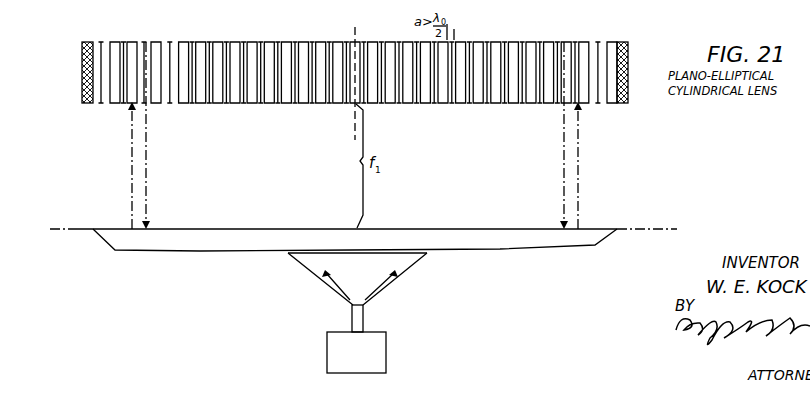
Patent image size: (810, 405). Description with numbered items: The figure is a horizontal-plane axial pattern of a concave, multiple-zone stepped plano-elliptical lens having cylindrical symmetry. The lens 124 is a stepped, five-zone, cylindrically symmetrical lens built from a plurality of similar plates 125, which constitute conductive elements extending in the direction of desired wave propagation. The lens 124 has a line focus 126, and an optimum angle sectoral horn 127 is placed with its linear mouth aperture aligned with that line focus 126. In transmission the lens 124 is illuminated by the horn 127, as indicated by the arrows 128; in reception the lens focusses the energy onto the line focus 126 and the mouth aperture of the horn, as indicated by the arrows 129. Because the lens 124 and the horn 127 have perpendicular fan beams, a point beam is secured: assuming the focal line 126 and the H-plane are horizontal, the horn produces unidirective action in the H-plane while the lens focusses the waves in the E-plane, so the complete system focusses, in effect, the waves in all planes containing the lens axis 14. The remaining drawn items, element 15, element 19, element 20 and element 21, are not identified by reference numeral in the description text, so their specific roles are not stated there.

The lens axis 14 is at (357, 31).
The rays 15 is at (350, 301).
The cone of radiation 19 is at (433, 242).
The source horn 20 is at (364, 318).
The source unit 21 is at (380, 352).
The lens 124 is at (621, 42).
The plates 125 is at (558, 43).
The line focus 126 is at (83, 231).
The sectoral horn 127 is at (292, 256).
The arrows 128 is at (131, 137).
The arrows 129 is at (149, 140).